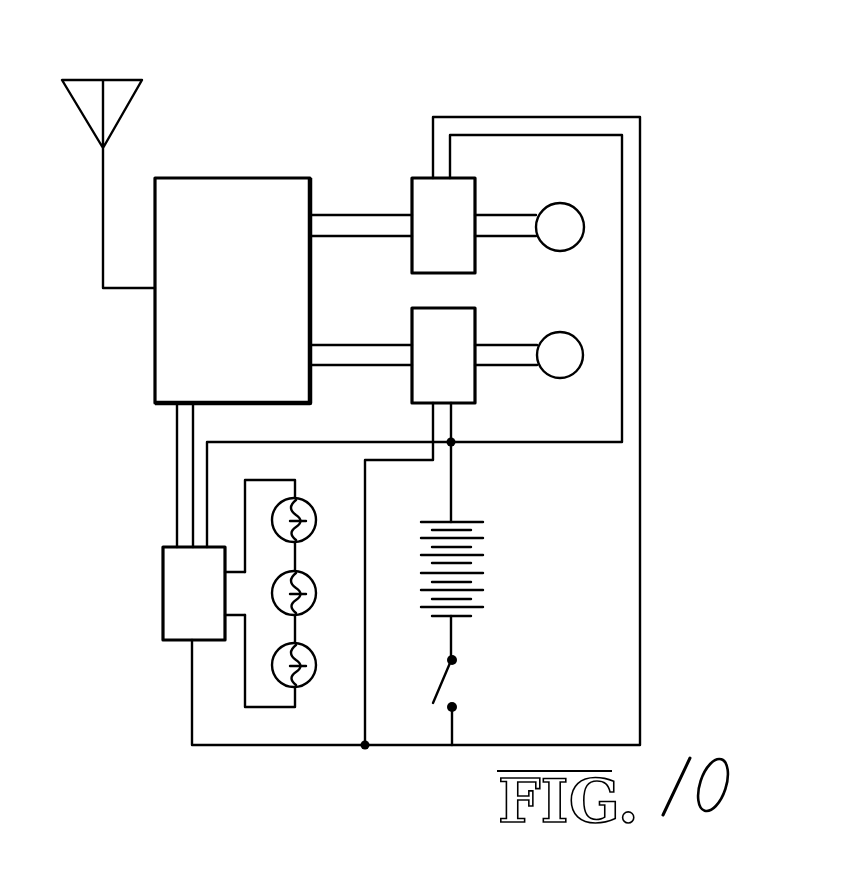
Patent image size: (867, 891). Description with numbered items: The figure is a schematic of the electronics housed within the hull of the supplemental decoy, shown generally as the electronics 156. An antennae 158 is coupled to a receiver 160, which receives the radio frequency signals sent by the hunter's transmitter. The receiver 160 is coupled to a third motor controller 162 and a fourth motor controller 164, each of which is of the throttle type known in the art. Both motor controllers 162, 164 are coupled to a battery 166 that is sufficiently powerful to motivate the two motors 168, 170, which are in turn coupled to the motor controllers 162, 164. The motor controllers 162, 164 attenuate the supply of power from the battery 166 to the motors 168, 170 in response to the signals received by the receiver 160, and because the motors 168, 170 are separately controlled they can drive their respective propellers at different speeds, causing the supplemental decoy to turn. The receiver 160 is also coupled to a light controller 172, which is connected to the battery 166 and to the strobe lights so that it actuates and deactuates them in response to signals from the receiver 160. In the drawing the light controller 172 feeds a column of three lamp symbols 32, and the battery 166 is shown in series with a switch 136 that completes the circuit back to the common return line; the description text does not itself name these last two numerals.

The electronics schematic 156 is at (549, 90).
The antennae 158 is at (130, 104).
The receiver 160 is at (210, 192).
The third motor controller 162 is at (420, 187).
The fourth motor controller 164 is at (427, 322).
The motor 168 is at (565, 218).
The motor 170 is at (575, 340).
The light controller 172 is at (176, 555).
The light emitting elements 32 is at (302, 682).
The battery 166 is at (465, 515).
The switch 136 is at (450, 673).